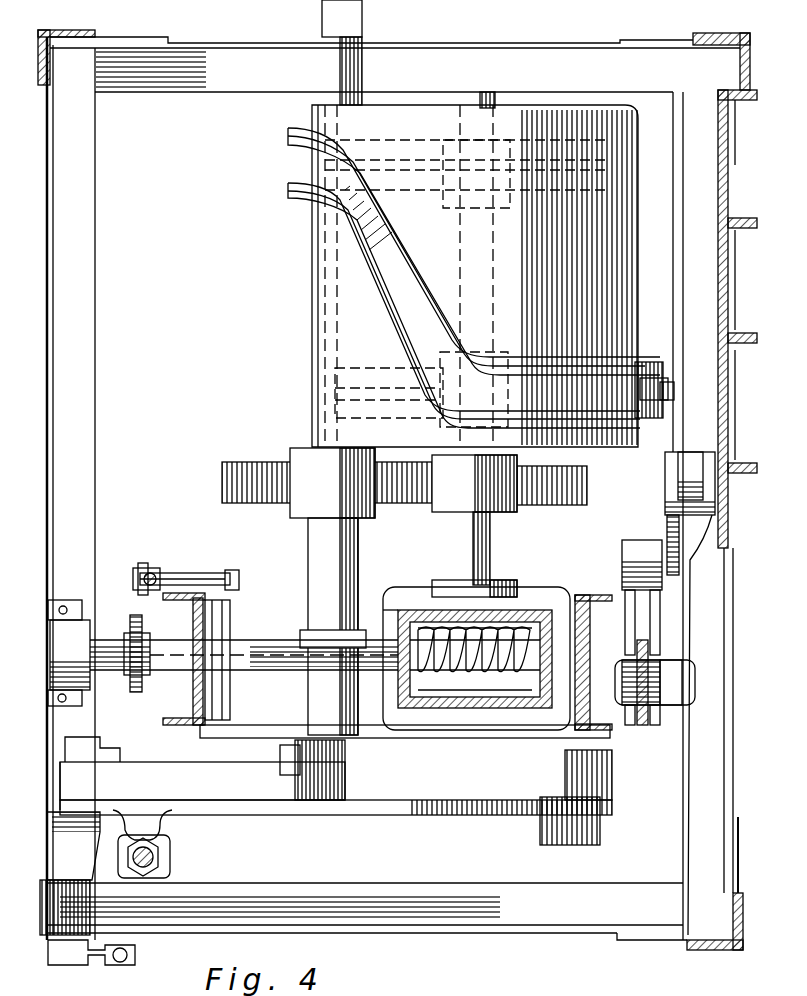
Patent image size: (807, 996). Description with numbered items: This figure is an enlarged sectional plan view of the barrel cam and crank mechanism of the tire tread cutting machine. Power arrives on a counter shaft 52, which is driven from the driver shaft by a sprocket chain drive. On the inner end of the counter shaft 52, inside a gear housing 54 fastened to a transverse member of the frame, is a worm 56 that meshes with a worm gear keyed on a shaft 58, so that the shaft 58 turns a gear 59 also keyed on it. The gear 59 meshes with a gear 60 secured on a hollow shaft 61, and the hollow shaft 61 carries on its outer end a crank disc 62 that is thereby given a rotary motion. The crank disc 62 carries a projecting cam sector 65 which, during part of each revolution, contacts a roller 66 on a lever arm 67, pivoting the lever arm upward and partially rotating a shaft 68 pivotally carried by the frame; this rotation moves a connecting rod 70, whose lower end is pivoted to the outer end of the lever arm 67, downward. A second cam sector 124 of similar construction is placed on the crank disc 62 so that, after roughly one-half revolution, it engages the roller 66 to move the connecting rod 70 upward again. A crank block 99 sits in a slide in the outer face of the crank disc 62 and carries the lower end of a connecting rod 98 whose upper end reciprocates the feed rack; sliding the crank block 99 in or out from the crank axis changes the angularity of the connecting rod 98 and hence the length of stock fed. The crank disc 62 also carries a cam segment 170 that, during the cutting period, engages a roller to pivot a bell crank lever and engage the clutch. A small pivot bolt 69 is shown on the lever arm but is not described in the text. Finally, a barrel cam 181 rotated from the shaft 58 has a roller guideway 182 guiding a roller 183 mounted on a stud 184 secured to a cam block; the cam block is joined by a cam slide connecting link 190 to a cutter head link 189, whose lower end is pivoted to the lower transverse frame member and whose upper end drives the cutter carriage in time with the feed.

The counter shaft 52 is at (100, 645).
The gear housing 54 is at (540, 610).
The worm 56 is at (460, 708).
The shaft 58 is at (492, 528).
The gear 59 is at (580, 508).
The gear 60 is at (222, 483).
The hollow shaft 61 is at (315, 535).
The crank disc 62 is at (435, 815).
The cam sector 65 is at (95, 755).
The roller 66 is at (312, 770).
The lever arm 67 is at (240, 740).
The shaft 68 is at (200, 730).
The lever arm 69 is at (185, 576).
The connecting rod 70 is at (153, 574).
The connecting rod 98 is at (172, 858).
The crank block 99 is at (178, 822).
The cam sector 124 is at (628, 760).
The cam segment 170 is at (600, 832).
The barrel cam 181 is at (352, 322).
The roller guideway 182 is at (380, 275).
The roller 183 is at (648, 385).
The stud 184 is at (668, 388).
The cutter head link 189 is at (622, 550).
The cam slide connecting link 190 is at (665, 472).